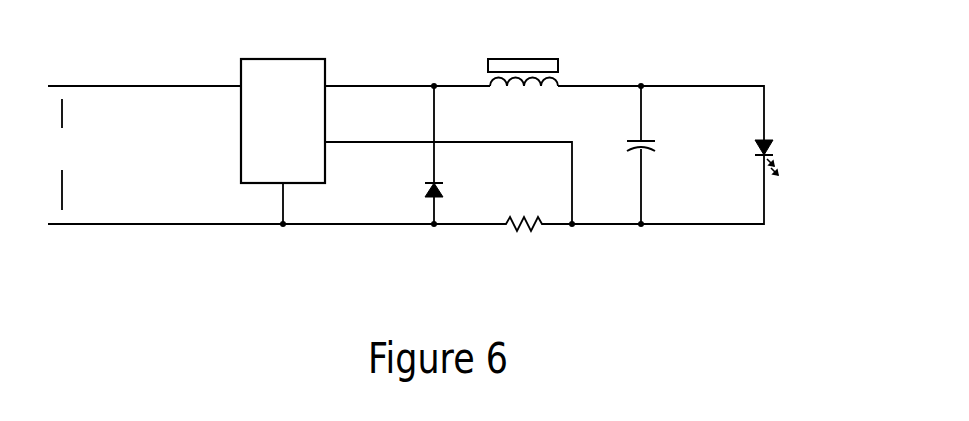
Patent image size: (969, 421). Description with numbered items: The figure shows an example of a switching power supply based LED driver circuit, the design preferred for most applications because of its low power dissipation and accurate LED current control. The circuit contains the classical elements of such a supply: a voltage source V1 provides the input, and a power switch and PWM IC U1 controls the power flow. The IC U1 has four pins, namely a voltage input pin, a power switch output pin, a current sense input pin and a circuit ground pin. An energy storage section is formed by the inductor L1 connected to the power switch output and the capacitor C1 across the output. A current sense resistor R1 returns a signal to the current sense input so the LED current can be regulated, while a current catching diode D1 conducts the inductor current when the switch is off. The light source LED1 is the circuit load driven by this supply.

The power switch and PWM IC U1 is at (283, 100).
The voltage source V1 is at (65, 154).
The inductor L1 is at (523, 52).
The current catching diode D1 is at (461, 187).
The current sense resistor R1 is at (523, 245).
The capacitor C1 is at (667, 159).
The light source LED1 is at (810, 152).